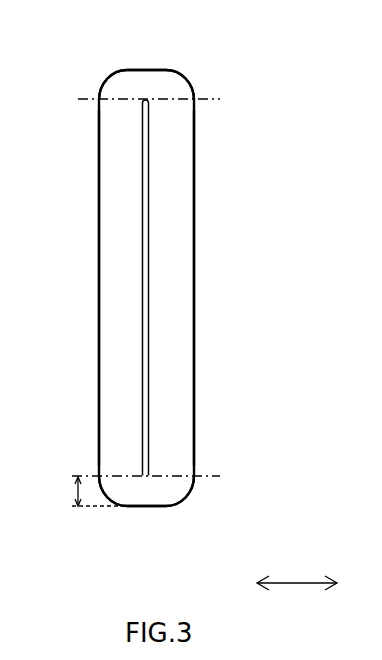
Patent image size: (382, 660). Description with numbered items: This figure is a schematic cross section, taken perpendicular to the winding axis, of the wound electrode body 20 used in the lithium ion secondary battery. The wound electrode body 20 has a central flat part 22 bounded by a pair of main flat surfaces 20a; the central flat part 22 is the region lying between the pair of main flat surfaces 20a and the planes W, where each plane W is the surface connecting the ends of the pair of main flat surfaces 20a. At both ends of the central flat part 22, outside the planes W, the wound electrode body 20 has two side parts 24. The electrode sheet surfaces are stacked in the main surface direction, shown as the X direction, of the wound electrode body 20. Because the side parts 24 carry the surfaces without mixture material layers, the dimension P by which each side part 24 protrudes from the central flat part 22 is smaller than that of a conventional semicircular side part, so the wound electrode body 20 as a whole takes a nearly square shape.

The wound electrode body 20 is at (200, 320).
The main flat surfaces 20a is at (98, 355).
The central flat part 22 is at (186, 225).
The side parts 24 is at (150, 78).
The plane W is at (205, 98).
The dimension P is at (86, 492).
The X direction X is at (297, 594).